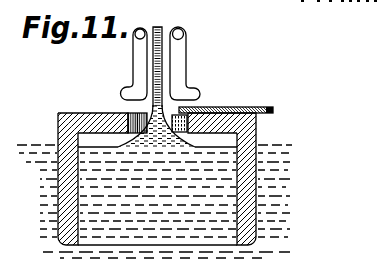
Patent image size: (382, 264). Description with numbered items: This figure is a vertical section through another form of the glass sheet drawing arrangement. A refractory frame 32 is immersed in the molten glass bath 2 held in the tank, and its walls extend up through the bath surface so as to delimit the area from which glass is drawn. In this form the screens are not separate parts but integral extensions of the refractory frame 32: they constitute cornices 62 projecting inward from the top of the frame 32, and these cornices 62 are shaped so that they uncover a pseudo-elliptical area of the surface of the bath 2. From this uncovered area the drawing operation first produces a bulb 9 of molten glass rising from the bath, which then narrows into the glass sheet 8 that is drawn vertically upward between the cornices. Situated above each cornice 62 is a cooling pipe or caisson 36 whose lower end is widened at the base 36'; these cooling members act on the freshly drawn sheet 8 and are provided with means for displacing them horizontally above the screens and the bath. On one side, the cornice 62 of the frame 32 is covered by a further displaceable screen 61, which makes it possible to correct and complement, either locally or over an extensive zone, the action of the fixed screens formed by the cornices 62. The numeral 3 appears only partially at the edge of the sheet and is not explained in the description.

The molten glass bath 2 is at (40, 168).
The partial numeral (cut off at sheet edge) 3 is at (4, 113).
The glass sheet 8 is at (162, 58).
The bulb 9 is at (163, 138).
The refractory frame 32 is at (247, 189).
The cooling pipe or caisson 36 is at (111, 64).
The widened base 36' is at (206, 63).
The displaceable screen 61 is at (240, 107).
The cornice 62 is at (88, 113).